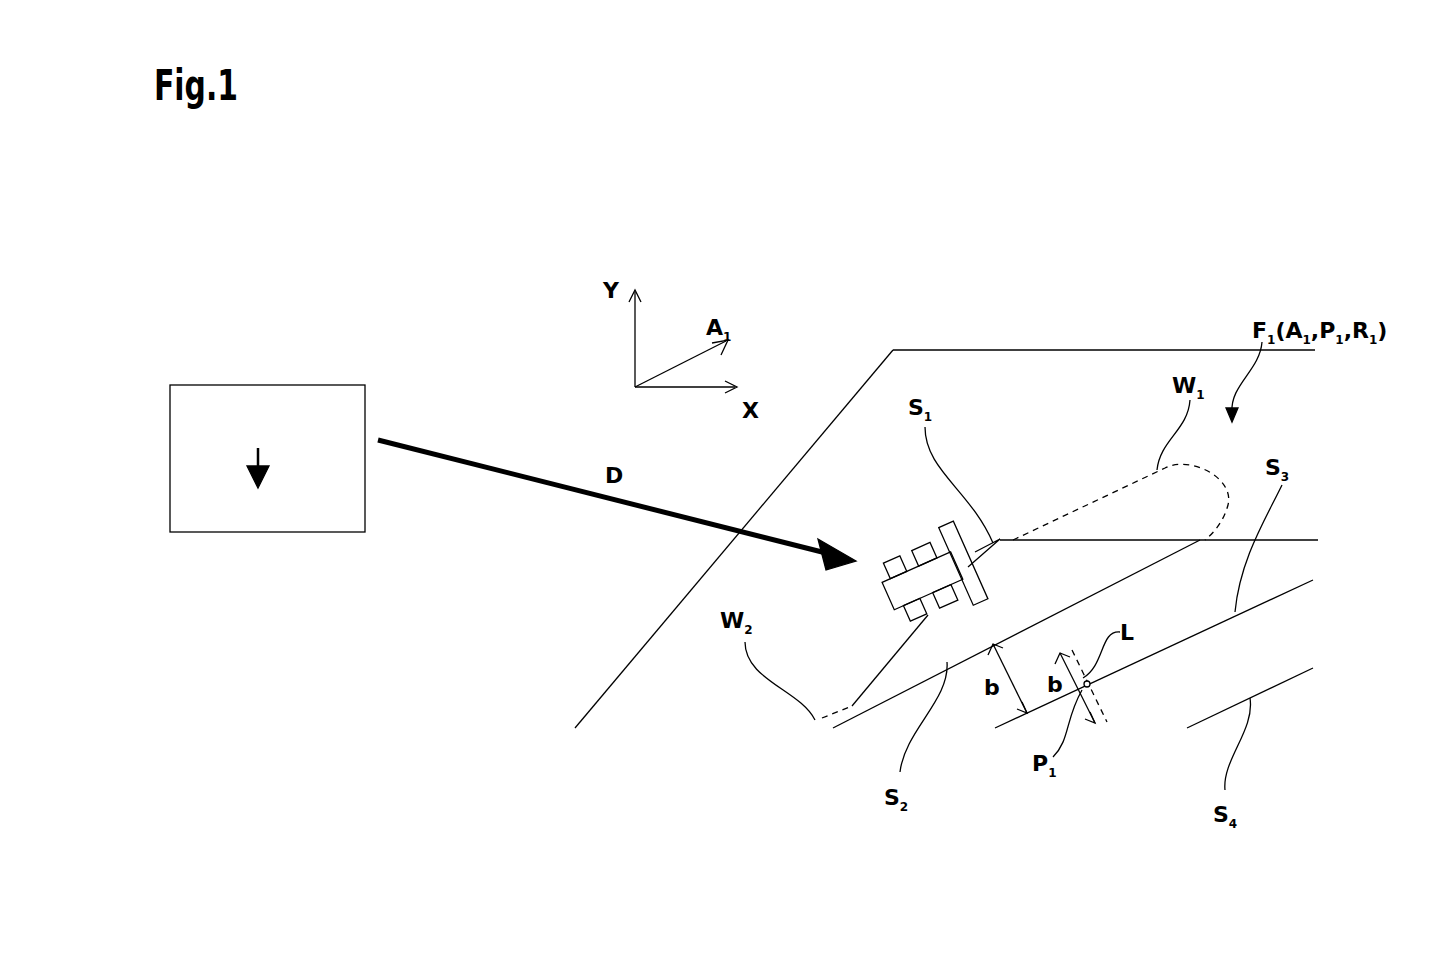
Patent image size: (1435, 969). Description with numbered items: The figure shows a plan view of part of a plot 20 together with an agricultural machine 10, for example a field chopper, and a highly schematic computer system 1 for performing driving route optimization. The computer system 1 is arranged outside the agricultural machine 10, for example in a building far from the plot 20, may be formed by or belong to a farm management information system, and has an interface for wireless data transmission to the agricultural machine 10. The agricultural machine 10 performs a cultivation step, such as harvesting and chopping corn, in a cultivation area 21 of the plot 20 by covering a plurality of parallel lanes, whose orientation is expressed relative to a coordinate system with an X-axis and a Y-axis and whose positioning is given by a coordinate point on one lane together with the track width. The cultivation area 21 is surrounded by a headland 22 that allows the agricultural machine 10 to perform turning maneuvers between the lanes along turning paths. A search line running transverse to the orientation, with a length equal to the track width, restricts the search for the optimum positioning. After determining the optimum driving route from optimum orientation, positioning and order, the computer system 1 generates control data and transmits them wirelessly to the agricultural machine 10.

The computer system 1 is at (250, 385).
The agricultural machine 10 is at (905, 566).
The plot 20 is at (608, 686).
The cultivation area 21 is at (895, 650).
The headland 22 is at (1143, 492).